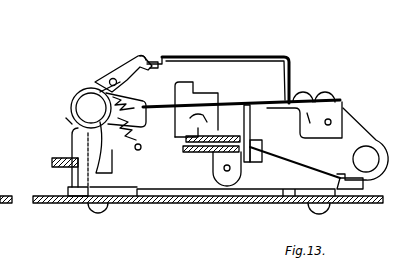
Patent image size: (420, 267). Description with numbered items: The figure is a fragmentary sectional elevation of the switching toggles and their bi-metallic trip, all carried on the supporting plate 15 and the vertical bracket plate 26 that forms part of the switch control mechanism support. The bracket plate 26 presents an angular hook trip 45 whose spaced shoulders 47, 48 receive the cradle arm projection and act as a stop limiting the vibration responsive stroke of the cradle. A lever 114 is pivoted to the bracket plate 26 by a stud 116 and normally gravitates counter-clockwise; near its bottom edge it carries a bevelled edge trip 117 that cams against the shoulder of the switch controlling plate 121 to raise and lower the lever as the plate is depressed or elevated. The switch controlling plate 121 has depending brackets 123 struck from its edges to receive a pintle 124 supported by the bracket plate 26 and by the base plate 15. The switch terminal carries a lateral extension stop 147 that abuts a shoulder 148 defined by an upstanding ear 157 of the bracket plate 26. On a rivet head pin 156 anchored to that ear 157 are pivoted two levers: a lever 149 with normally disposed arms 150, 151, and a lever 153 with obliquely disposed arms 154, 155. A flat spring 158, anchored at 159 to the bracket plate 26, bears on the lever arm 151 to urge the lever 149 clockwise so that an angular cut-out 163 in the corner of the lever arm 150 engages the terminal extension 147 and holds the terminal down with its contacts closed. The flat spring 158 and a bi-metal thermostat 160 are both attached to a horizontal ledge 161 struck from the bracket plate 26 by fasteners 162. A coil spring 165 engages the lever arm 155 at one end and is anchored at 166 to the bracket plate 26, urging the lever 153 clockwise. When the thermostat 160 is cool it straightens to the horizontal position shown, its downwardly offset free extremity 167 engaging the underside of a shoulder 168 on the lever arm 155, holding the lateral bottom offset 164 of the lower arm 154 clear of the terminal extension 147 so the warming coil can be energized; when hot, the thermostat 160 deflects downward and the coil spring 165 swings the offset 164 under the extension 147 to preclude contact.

The supporting plate 15 is at (178, 207).
The vertical bracket plate 26 is at (330, 98).
The angular hook trip 45 is at (205, 90).
The shoulder 47 is at (190, 119).
The shoulder 48 is at (185, 88).
The lever 114 is at (330, 140).
The stud (pivot pin) 116 is at (363, 159).
The bevelled edge trip 117 is at (350, 183).
The switch controlling plate 121 is at (233, 108).
The depending brackets 123 is at (236, 165).
The pintle 124 is at (229, 171).
The lateral extension stop 147 is at (78, 160).
The shoulder 148 is at (68, 121).
The lever 149 is at (100, 135).
The lever arm 150 is at (85, 170).
The lever arm 151 is at (133, 107).
The lever 153 is at (93, 72).
The lower lever arm 154 is at (112, 155).
The lever arm 155 is at (100, 78).
The rivet head pin 156 is at (85, 107).
The upstanding ear 157 is at (66, 118).
The flat spring 158 is at (252, 105).
The anchorage 159 is at (308, 95).
The bi-metal thermostat 160 is at (210, 56).
The horizontal ledge 161 is at (342, 100).
The fasteners 162 is at (305, 100).
The angular cut-out 163 is at (78, 134).
The lateral bottom offset 164 is at (97, 142).
The coil spring 165 is at (135, 92).
The anchorage 166 is at (141, 148).
The downwardly offset free extremity 167 is at (151, 63).
The shoulder 168 is at (143, 57).